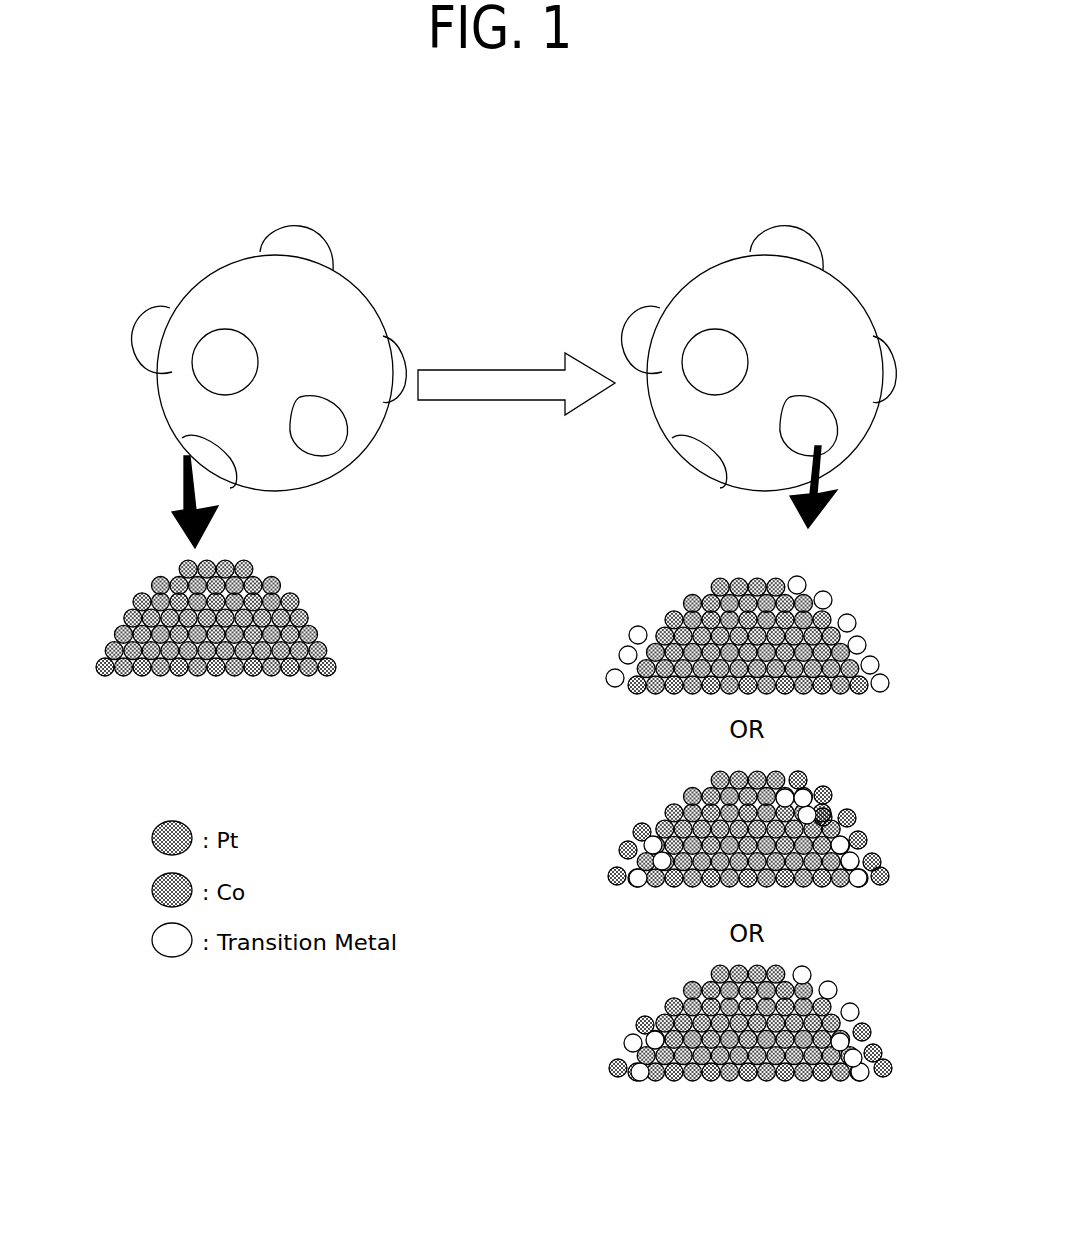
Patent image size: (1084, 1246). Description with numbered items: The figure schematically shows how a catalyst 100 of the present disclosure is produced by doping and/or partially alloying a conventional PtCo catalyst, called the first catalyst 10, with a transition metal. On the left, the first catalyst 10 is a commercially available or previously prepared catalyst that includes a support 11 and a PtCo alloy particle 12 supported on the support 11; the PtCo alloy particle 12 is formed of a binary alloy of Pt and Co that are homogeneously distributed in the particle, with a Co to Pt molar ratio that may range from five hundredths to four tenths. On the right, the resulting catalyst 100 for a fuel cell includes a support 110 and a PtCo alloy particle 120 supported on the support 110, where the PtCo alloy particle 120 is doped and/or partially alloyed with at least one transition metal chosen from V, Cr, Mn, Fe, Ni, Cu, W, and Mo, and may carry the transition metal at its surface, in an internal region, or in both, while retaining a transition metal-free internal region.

The first catalyst 10 is at (242, 164).
The support 11 is at (207, 268).
The PtCo alloy particle 12 is at (303, 243).
The catalyst 100 is at (769, 164).
The support 110 is at (702, 268).
The PtCo alloy particle 120 is at (797, 243).